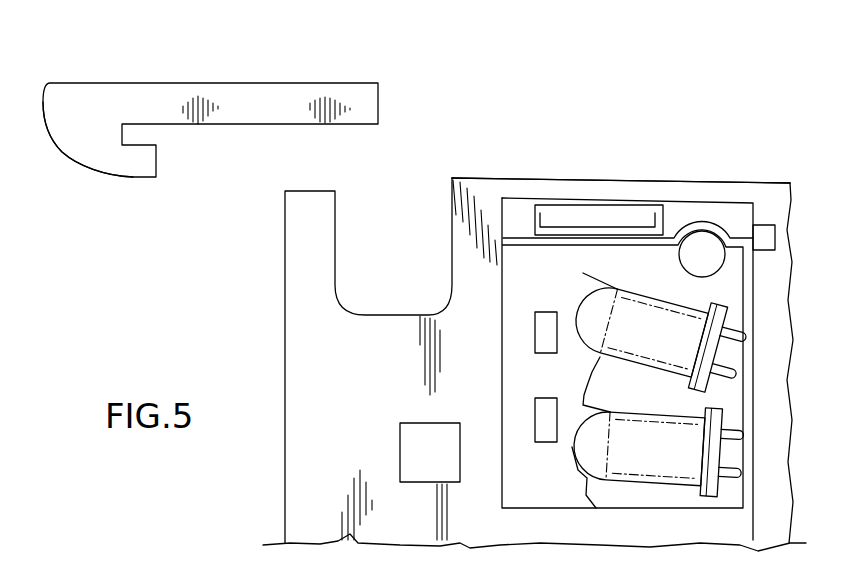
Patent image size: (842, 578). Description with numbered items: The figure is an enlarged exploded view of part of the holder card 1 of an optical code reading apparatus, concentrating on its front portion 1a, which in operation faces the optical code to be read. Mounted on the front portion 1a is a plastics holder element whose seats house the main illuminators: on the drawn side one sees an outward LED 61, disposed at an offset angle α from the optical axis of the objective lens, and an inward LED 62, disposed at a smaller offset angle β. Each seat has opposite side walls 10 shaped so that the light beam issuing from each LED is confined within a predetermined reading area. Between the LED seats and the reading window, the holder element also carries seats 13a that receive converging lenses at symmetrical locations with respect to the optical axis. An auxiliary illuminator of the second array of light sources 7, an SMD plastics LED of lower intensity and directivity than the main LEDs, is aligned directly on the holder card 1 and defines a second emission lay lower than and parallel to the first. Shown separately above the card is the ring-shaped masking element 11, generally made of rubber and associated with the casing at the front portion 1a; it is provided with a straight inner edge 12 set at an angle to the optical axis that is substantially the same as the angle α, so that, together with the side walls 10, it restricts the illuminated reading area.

The holder card 1 is at (682, 188).
The front portion 1a is at (513, 163).
The second array of light sources 7 is at (412, 447).
The side walls 10 is at (582, 271).
The masking element 11 is at (242, 102).
The inner edge 12 is at (83, 157).
The seats 13a is at (547, 427).
The outward LEDs 61 is at (634, 318).
The inward LEDs 62 is at (650, 440).